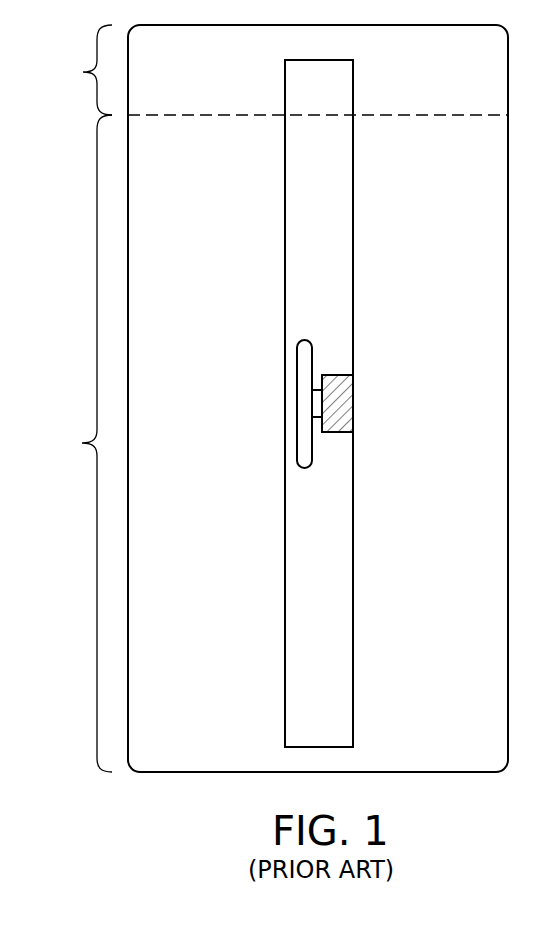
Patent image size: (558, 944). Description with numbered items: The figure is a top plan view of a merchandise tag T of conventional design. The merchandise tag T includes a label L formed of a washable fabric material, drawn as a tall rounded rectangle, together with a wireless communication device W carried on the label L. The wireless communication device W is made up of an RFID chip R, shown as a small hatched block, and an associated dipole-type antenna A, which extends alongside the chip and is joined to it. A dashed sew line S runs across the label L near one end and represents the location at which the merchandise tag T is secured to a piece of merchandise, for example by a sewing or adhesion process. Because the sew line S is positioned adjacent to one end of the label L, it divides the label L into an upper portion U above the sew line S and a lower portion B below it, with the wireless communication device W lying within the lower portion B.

The label L is at (463, 370).
The sew line S is at (408, 115).
The upper portion U is at (87, 70).
The lower portion B is at (85, 443).
The wireless communication device W is at (346, 650).
The dipole-type antenna A is at (297, 352).
The RFID chip R is at (353, 400).
The merchandise tag T is at (117, 653).